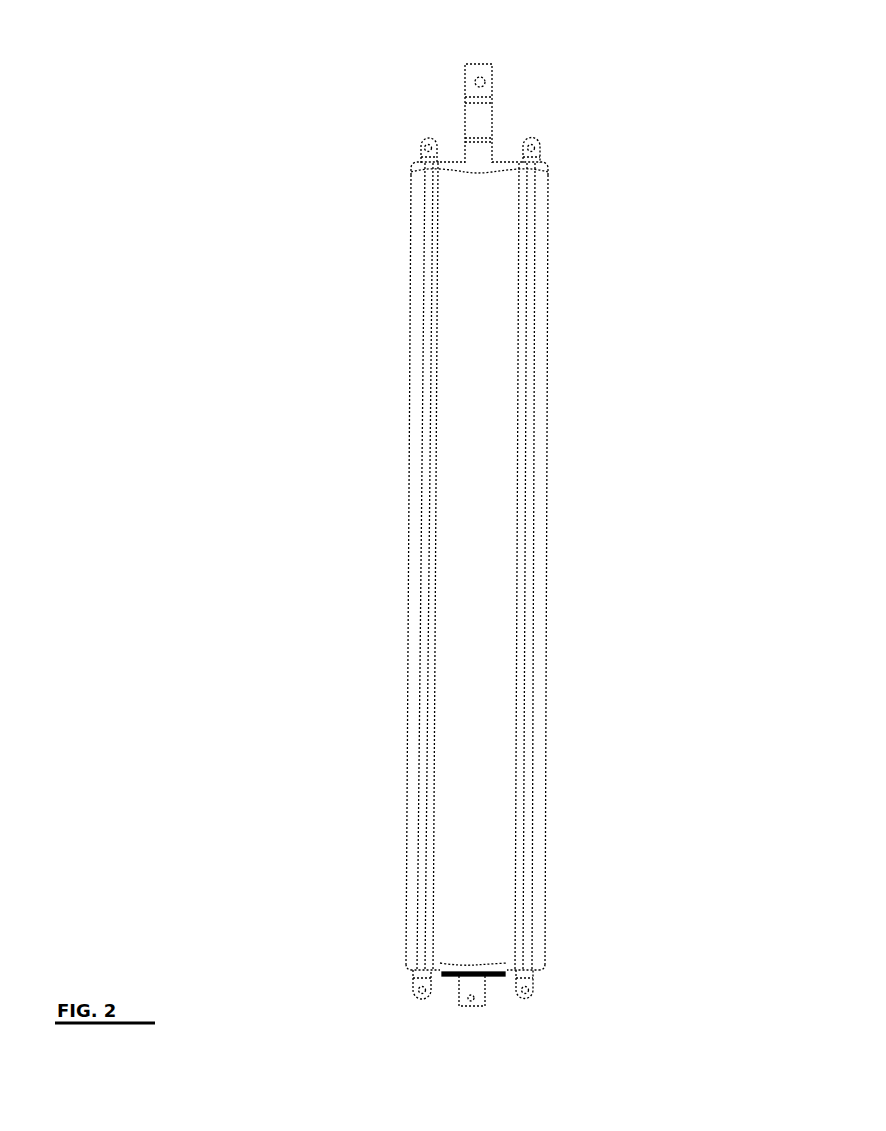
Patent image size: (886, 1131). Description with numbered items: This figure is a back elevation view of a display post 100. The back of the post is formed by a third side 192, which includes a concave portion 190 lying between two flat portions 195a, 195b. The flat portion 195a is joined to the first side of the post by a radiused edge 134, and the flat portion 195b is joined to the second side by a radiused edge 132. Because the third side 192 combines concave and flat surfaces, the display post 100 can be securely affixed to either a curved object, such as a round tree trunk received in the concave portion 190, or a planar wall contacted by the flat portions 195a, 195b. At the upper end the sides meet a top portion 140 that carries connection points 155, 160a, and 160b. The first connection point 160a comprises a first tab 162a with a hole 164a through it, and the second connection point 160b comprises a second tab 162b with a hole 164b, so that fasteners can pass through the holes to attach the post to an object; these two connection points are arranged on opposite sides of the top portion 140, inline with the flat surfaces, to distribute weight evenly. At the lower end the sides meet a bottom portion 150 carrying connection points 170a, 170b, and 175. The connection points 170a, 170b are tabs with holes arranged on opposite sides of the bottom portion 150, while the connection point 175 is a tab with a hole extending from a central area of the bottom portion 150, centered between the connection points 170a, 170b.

The display post 100 is at (222, 210).
The connection point 155 is at (490, 73).
The second tab 162b is at (425, 140).
The hole 164b is at (424, 145).
The second connection point 160b is at (418, 153).
The first tab 162a is at (533, 140).
The hole 164a is at (540, 148).
The first connection point 160a is at (540, 157).
The top portion 140 is at (509, 164).
The concave portion 190 is at (467, 307).
The flat portion 195b is at (424, 402).
The flat portion 195a is at (530, 399).
The radiused edge 132 is at (407, 538).
The radiused edge 134 is at (542, 533).
The third side 192 is at (437, 765).
The bottom portion 150 is at (505, 973).
The connection point 175 is at (458, 998).
The connection point 170b is at (413, 988).
The connection point 170a is at (535, 988).